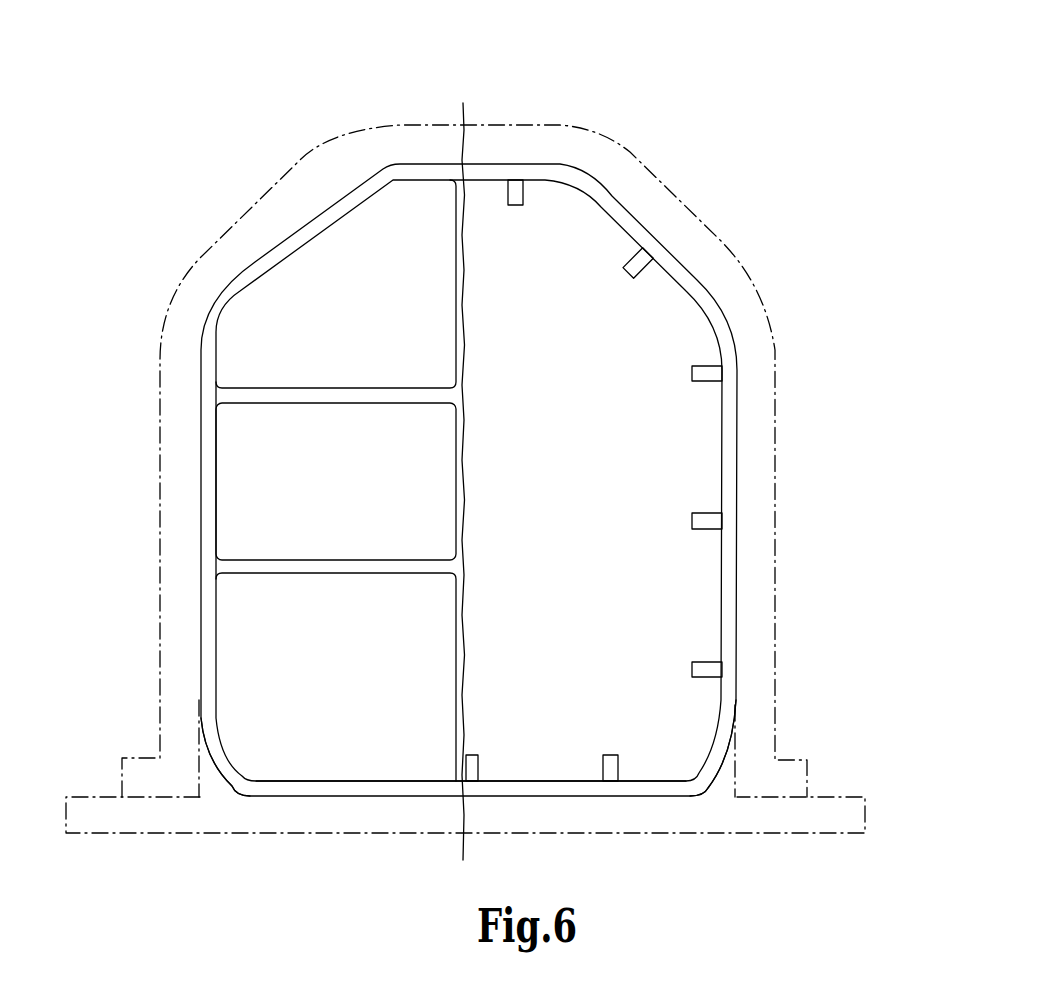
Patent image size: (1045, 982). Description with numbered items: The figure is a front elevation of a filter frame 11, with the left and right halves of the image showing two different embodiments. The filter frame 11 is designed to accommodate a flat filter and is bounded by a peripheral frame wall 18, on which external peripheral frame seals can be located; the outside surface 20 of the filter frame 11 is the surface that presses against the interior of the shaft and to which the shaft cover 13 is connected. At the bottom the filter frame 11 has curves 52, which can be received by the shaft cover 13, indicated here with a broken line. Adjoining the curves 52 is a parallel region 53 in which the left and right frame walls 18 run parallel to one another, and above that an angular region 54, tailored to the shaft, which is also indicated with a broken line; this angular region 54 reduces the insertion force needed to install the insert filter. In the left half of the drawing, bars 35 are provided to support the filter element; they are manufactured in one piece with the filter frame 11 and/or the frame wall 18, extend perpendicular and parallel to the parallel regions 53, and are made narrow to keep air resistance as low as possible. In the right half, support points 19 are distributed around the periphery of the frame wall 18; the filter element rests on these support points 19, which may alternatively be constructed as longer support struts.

The filter frame 11 is at (598, 103).
The shaft cover 13 is at (776, 595).
The frame wall 18 is at (636, 222).
The support points 19 is at (638, 266).
The outside surface 20 is at (408, 797).
The bars 35 is at (460, 243).
The curves 52 is at (227, 797).
The parallel region 53 is at (188, 487).
The angular region 54 is at (240, 259).